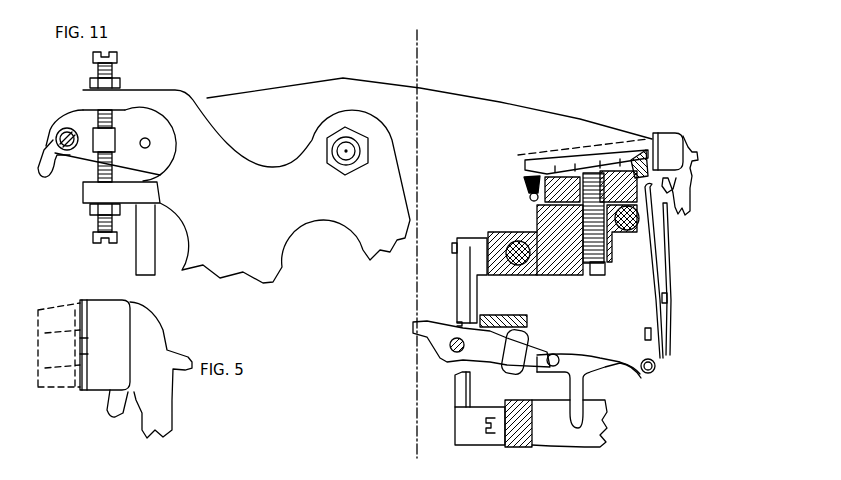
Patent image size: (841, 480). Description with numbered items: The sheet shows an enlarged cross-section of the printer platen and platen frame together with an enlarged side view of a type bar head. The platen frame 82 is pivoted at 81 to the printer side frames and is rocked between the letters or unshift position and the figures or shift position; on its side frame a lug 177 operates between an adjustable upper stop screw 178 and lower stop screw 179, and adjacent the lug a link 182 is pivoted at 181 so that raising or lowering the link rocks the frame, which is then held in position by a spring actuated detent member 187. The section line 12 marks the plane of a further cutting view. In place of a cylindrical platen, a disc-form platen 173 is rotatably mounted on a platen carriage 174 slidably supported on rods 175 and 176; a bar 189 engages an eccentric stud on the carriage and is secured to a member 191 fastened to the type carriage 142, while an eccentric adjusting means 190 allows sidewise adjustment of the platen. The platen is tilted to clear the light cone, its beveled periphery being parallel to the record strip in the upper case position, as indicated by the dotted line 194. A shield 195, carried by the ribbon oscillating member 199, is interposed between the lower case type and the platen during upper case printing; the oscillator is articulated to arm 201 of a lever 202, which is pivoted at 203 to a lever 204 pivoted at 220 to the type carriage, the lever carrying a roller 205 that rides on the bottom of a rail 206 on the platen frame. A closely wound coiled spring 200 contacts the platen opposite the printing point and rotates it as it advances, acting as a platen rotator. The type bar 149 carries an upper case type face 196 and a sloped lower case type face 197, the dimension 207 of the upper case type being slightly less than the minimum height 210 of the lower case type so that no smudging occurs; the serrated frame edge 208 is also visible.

In FIG. 11, the section line 12 is at (432, 36).
In FIG. 11, the pivot 81 is at (344, 150).
In FIG. 11, the platen frame 82 is at (433, 99).
In FIG. 11, the type carriage 142 is at (592, 444).
In FIG. 11, the type bar 149 is at (688, 192).
In FIG. 5, the type bar 149 is at (163, 415).
In FIG. 11, the platen 173 is at (553, 180).
In FIG. 5, the platen 173 is at (56, 345).
In FIG. 11, the platen carriage 174 is at (543, 223).
In FIG. 11, the rod 175 is at (510, 232).
In FIG. 11, the rod 176 is at (639, 222).
In FIG. 11, the lug 177 is at (108, 140).
In FIG. 11, the upper stop screw 178 is at (97, 118).
In FIG. 11, the lower stop screw 179 is at (97, 225).
In FIG. 11, the pivot 181 is at (149, 139).
In FIG. 11, the link 182 is at (136, 272).
In FIG. 11, the detent member 187 is at (45, 173).
In FIG. 11, the bar 189 is at (473, 293).
In FIG. 11, the eccentric adjusting means 190 is at (456, 246).
In FIG. 11, the member 191 is at (455, 386).
In FIG. 11, the dotted line 194 is at (595, 147).
In FIG. 11, the shield 195 is at (654, 247).
In FIG. 11, the upper case type face 196 is at (651, 142).
In FIG. 5, the upper case type face 196 is at (82, 315).
In FIG. 11, the lower case type face 197 is at (650, 165).
In FIG. 5, the lower case type face 197 is at (78, 392).
In FIG. 11, the ribbon oscillating member 199 is at (669, 283).
In FIG. 11, the coiled spring 200 is at (530, 196).
In FIG. 11, the arm 201 is at (656, 380).
In FIG. 11, the lever 202 is at (593, 375).
In FIG. 11, the pivot 203 is at (553, 354).
In FIG. 11, the lever 204 is at (538, 364).
In FIG. 11, the roller 205 is at (524, 337).
In FIG. 11, the rail 206 is at (520, 317).
In FIG. 5, the dimension of upper case type 207 is at (81, 338).
In FIG. 11, the frame edge 208 is at (582, 416).
In FIG. 5, the minimum height of lower case type 210 is at (81, 354).
In FIG. 11, the pivot 220 is at (449, 345).